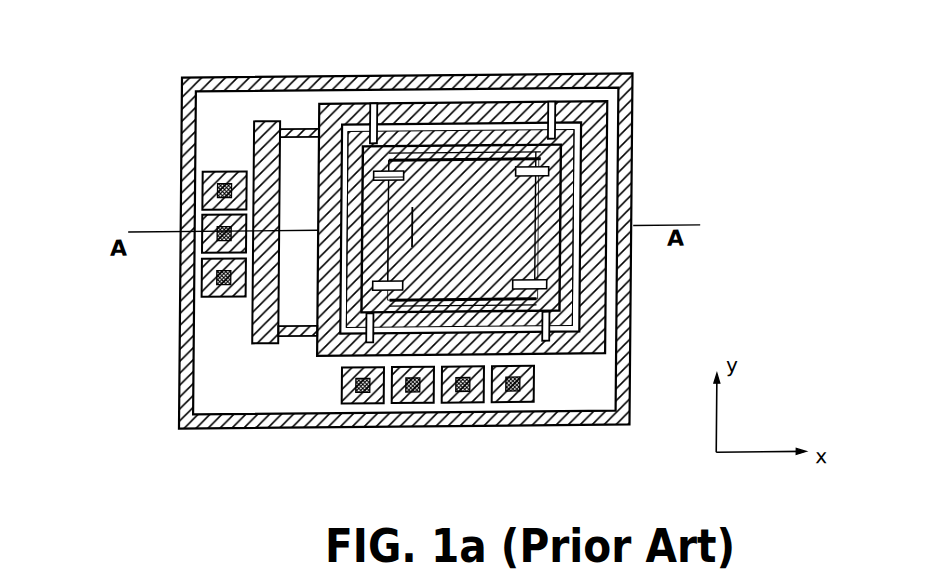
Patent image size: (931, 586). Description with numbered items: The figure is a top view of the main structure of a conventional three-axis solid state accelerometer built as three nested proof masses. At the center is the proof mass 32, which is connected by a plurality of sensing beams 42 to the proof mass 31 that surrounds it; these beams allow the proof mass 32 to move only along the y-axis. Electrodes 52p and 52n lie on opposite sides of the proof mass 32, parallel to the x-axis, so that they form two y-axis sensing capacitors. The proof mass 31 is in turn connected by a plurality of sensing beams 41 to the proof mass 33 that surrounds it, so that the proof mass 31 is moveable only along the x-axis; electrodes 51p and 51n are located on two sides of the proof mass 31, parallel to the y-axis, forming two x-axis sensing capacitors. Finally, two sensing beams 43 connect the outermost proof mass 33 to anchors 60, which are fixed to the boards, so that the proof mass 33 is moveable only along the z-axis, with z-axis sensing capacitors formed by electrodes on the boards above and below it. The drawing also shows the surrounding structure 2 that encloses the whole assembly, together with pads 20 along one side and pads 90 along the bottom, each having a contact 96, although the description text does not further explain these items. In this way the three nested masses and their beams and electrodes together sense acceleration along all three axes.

The substrate frame 2 is at (620, 112).
The bonding pads 20 is at (215, 241).
The proof mass 31 is at (572, 262).
The proof mass 32 is at (512, 221).
The proof mass 33 is at (590, 197).
The sensing beams 41 is at (373, 105).
The sensing beams 42 is at (405, 173).
The sensing beams 43 is at (297, 108).
The electrode 51p is at (575, 168).
The electrode 51n is at (317, 353).
The electrode 52p is at (477, 150).
The electrode 52n is at (460, 281).
The anchors 60 is at (257, 137).
The bonding pads 90 is at (517, 423).
The contact 96 is at (517, 388).